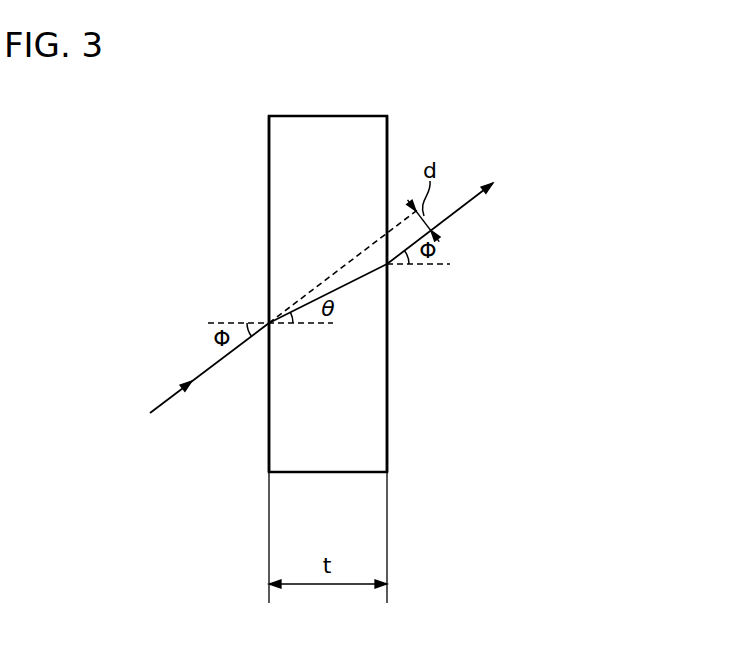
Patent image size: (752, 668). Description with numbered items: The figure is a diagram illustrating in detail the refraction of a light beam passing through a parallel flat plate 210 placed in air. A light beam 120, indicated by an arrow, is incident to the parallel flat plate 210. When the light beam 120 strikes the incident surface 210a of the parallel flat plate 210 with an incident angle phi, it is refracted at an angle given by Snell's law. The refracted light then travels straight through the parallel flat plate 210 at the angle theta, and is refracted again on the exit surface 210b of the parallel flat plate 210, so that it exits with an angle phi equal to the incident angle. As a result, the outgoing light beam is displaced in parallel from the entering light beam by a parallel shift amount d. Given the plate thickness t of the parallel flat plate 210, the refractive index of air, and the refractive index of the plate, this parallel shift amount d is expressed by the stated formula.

The light beam 120 is at (167, 400).
The parallel flat plate 210 is at (302, 457).
The incident surface 210a is at (268, 184).
The exit surface 210b is at (387, 375).